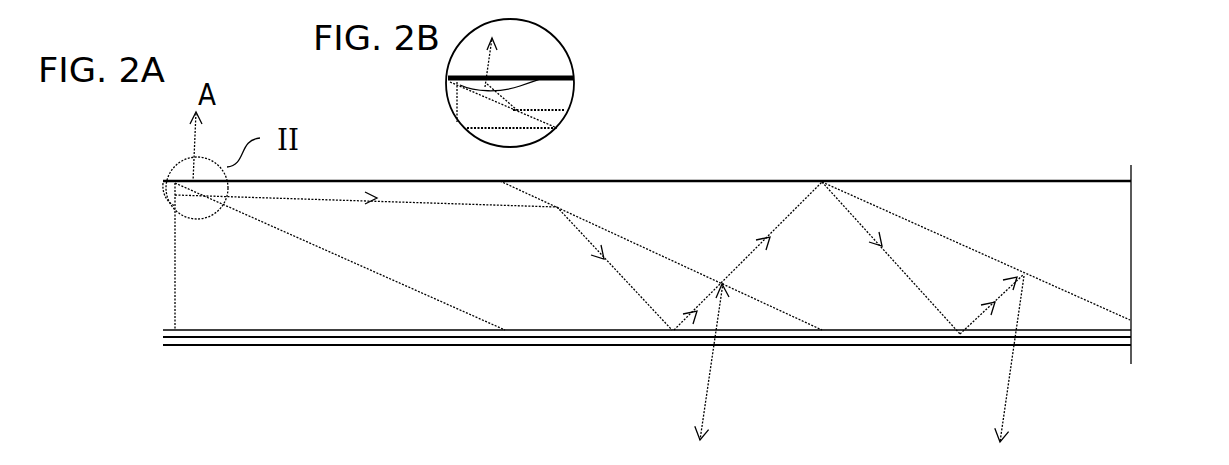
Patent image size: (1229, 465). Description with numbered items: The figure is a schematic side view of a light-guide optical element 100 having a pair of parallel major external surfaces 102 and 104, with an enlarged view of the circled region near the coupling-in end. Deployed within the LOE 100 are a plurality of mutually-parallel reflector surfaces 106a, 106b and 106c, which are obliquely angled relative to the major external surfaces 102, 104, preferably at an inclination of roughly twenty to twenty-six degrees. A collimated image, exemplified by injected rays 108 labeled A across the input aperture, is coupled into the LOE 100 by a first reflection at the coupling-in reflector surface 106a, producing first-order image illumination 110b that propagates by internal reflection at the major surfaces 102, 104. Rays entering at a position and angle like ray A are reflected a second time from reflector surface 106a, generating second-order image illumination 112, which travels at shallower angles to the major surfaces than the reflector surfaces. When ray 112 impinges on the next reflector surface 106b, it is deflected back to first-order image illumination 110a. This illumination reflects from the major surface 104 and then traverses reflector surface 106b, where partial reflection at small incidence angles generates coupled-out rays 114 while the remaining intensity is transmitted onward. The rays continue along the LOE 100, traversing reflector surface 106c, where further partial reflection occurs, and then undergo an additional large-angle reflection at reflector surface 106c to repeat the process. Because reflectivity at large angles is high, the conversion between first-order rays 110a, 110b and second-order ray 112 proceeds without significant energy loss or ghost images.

In FIG. 2A, the light-guide optical element 100 is at (1142, 138).
In FIG. 2A, the major external surface 102 is at (1085, 181).
In FIG. 2A, the major external surface 104 is at (180, 348).
In FIG. 2A, the reflector surface 106a is at (330, 254).
In FIG. 2B, the reflector surface 106a is at (453, 86).
In FIG. 2A, the reflector surface 106b is at (758, 304).
In FIG. 2A, the reflector surface 106c is at (1059, 290).
In FIG. 2A, the injected rays 108 is at (193, 143).
In FIG. 2A, the image rays 110a is at (848, 213).
In FIG. 2B, the image rays 110a is at (543, 77).
In FIG. 2A, the conjugate image rays 110b is at (780, 222).
In FIG. 2A, the second-order image illumination ray 112 is at (460, 200).
In FIG. 2B, the second-order image illumination ray 112 is at (563, 110).
In FIG. 2A, the coupled-out rays 114 is at (707, 404).